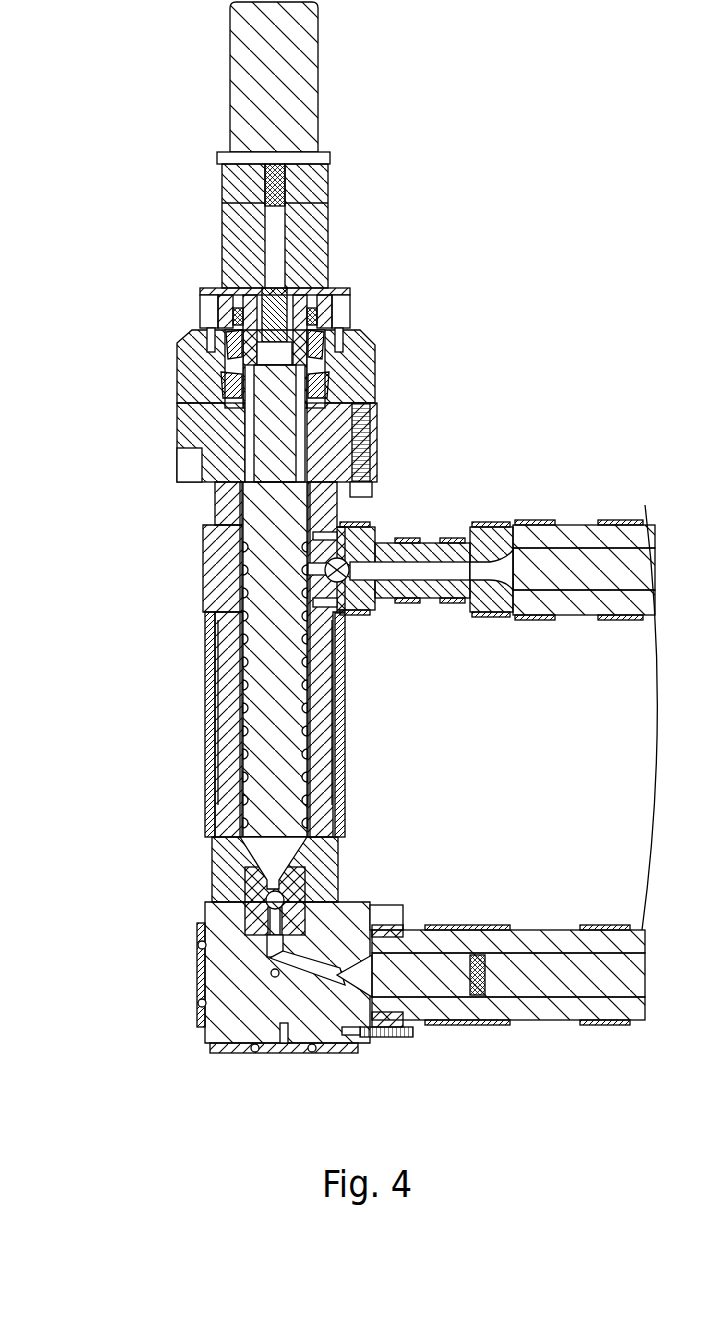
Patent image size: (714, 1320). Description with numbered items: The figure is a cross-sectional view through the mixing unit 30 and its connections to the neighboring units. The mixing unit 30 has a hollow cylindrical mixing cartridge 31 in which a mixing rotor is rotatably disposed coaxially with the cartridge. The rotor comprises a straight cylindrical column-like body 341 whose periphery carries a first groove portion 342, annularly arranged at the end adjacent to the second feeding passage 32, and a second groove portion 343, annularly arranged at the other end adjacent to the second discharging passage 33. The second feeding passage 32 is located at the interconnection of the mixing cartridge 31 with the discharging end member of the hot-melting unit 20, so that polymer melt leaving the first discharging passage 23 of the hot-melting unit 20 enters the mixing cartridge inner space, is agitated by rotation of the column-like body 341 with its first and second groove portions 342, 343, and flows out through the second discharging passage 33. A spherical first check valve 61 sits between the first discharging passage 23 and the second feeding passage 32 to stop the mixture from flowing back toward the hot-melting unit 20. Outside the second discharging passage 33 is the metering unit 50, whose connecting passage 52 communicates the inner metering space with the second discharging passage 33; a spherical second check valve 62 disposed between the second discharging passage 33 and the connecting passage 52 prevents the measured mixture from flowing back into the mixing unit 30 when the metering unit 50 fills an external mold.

The mixing unit 30 is at (184, 281).
The mixing cartridge 31 is at (208, 582).
The second feeding passage 32 is at (318, 565).
The second discharging passage 33 is at (250, 877).
The column-like body 341 is at (272, 498).
The first groove portion 342 is at (242, 552).
The second groove portion 343 is at (242, 772).
The hot-melting unit 20 is at (600, 506).
The first discharging passage 23 is at (482, 545).
The metering unit 50 is at (566, 1048).
The connecting passage 52 is at (288, 962).
The first check valve 61 is at (352, 567).
The second check valve 62 is at (244, 922).